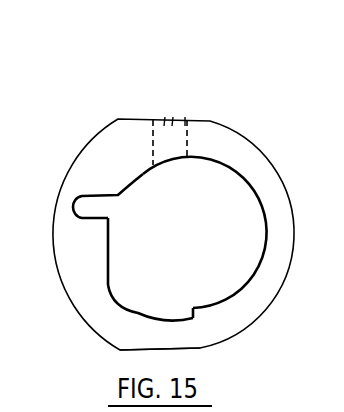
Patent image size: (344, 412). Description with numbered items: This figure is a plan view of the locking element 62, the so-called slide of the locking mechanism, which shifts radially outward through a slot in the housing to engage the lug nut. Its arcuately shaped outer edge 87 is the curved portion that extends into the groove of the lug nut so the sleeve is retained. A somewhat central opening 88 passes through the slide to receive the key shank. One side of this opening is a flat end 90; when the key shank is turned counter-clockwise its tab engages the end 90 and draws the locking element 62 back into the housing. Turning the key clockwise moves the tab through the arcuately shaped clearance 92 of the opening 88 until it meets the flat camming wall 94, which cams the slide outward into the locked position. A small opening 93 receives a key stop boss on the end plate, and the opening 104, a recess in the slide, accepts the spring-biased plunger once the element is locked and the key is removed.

The arcuately shaped outer edge 87 is at (50, 224).
The central opening 88 is at (167, 175).
The small opening 93 is at (84, 213).
The flat camming wall 94 is at (108, 245).
The locking element 62 is at (95, 298).
The arcuately shaped clearance 92 is at (115, 337).
The flat end 90 is at (200, 315).
The opening 104 is at (185, 119).